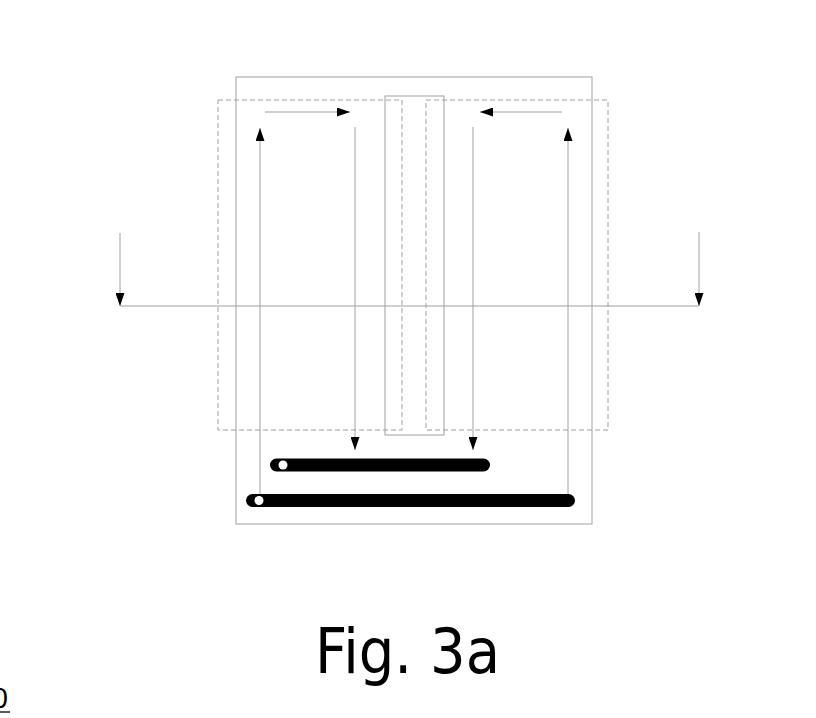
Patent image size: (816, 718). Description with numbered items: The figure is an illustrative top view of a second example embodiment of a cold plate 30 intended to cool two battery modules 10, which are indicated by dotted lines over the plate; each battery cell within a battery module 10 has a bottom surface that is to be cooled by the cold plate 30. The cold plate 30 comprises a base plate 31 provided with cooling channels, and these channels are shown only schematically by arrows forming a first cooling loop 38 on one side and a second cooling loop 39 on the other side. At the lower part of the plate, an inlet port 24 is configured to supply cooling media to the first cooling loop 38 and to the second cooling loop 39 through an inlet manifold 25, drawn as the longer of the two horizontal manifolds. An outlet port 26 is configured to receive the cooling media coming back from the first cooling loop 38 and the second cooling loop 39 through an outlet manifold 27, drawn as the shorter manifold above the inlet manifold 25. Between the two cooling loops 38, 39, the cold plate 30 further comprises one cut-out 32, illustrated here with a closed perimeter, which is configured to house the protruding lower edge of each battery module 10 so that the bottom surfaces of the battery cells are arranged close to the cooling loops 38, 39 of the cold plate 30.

The cold plate 30 is at (148, 95).
The base plate 31 is at (583, 89).
The battery module 10 is at (218, 157).
The cut-out 32 is at (418, 118).
The first cooling loop 38 is at (300, 112).
The second cooling loop 39 is at (510, 113).
The outlet manifold 27 is at (490, 468).
The inlet manifold 25 is at (450, 507).
The outlet port 26 is at (278, 457).
The inlet port 24 is at (261, 509).